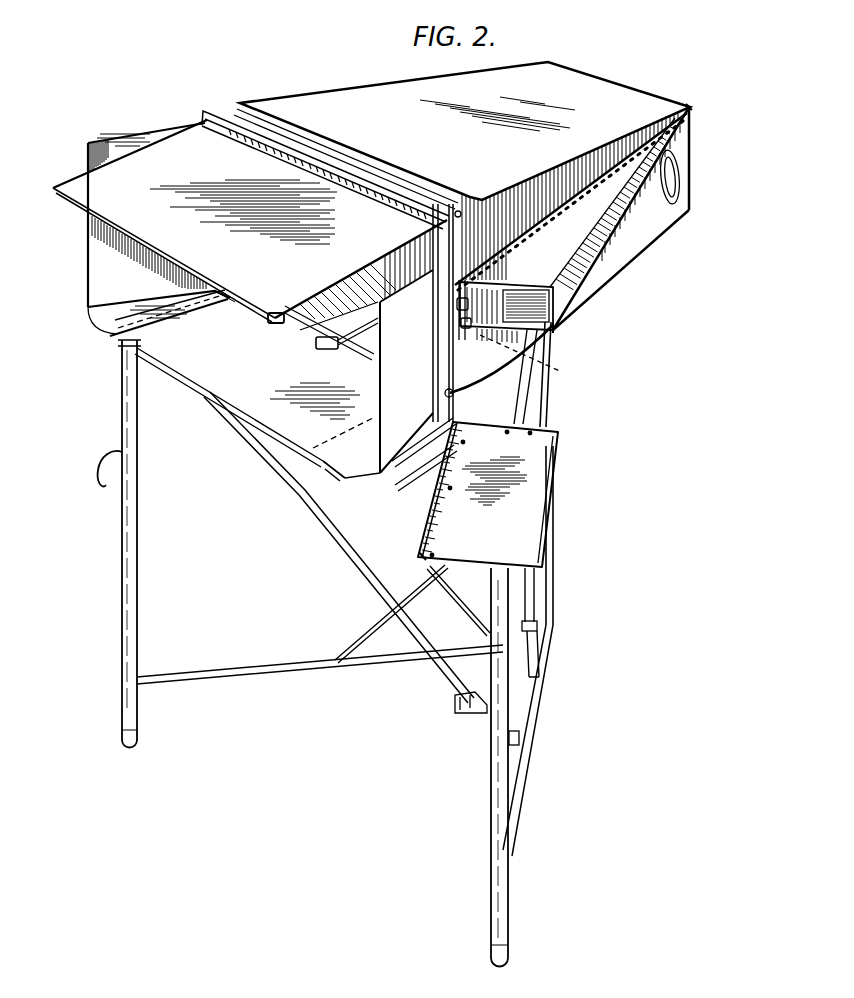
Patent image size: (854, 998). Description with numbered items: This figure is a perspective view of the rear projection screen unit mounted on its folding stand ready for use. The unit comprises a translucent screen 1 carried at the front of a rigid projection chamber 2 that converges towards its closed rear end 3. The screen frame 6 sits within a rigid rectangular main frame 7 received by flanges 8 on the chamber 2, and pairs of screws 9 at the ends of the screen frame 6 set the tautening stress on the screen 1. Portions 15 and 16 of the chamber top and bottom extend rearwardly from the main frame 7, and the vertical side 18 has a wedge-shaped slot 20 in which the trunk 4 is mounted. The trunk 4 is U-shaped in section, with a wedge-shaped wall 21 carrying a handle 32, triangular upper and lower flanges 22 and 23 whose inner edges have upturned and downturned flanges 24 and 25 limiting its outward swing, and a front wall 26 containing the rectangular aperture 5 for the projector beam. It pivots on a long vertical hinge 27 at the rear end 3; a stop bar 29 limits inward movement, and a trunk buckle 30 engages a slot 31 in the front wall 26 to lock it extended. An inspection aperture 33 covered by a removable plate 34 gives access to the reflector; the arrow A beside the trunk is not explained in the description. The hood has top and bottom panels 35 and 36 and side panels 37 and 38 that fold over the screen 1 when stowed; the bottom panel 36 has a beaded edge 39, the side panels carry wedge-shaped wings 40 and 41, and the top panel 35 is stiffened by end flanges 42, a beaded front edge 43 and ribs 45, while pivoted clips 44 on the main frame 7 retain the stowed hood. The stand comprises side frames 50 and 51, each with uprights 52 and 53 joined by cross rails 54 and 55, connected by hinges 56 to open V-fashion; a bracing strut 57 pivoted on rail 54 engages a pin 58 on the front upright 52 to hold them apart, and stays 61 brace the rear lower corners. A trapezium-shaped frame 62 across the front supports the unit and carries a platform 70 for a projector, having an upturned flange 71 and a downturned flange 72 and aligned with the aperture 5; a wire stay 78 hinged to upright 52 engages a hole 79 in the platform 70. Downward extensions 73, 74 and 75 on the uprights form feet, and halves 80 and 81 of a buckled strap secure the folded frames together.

The translucent screen 1 is at (316, 342).
The projection chamber 2 is at (366, 112).
The closed rear end 3 is at (640, 97).
The trunk 4 is at (597, 222).
The aperture 5 is at (555, 328).
The screen frame 6 is at (352, 348).
The main frame 7 is at (358, 187).
The flanges 8 is at (405, 200).
The screws 9 is at (462, 212).
The rearwardly extending portion of the top 15 is at (250, 112).
The rearwardly extending portion of the bottom 16 is at (470, 369).
The vertical side of the chamber 18 is at (570, 165).
The wedge shaped longitudinal slot 20 is at (462, 328).
The vertical wall of the trunk 21 is at (586, 266).
The upper flange of the trunk 22 is at (594, 224).
The lower flange of the trunk 23 is at (637, 293).
The upturned flange 24 is at (535, 182).
The downturned flange 25 is at (537, 358).
The front vertical wall of the trunk 26 is at (506, 299).
The vertical hinge 27 is at (684, 110).
The stop bar 29 is at (560, 325).
The trunk buckle 30 is at (457, 303).
The slot 31 is at (463, 294).
The carrying handle 32 is at (587, 297).
The inspection aperture 33 is at (669, 202).
The removable plate 34 is at (655, 214).
The top panel 35 is at (195, 221).
The bottom panel 36 is at (169, 327).
The side panel 37 is at (108, 281).
The side panel 38 is at (351, 374).
The beaded free edge 39 is at (335, 460).
The wing 40 is at (118, 152).
The wing 41 is at (120, 319).
The downturned flange 42 is at (297, 322).
The beaded front edge 43 is at (257, 318).
The pivoted clips 44 is at (427, 478).
The longitudinal ribs 45 is at (260, 144).
The side frame 50 is at (140, 597).
The side frame 51 is at (490, 758).
The upright 52 is at (127, 656).
The upright 53 is at (547, 618).
The top cross rail 54 is at (520, 418).
The bottom cross rail 55 is at (250, 678).
The hinges 56 is at (550, 639).
The cross bracing strut 57 is at (340, 553).
The pin 58 is at (520, 739).
The stays 61 is at (555, 562).
The trapezium shaped frame 62 is at (400, 473).
The platform 70 is at (530, 484).
The upturned flange 71 is at (440, 524).
The downturned flange 72 is at (553, 509).
The downward extension 73 is at (122, 718).
The downward extension 74 is at (547, 673).
The downward extension 75 is at (510, 951).
The diagonal wire stay 78 is at (457, 604).
The hole 79 is at (432, 555).
The buckled strap half 80 is at (103, 463).
The buckled strap half 81 is at (457, 717).
The viewing direction arrow A is at (640, 312).